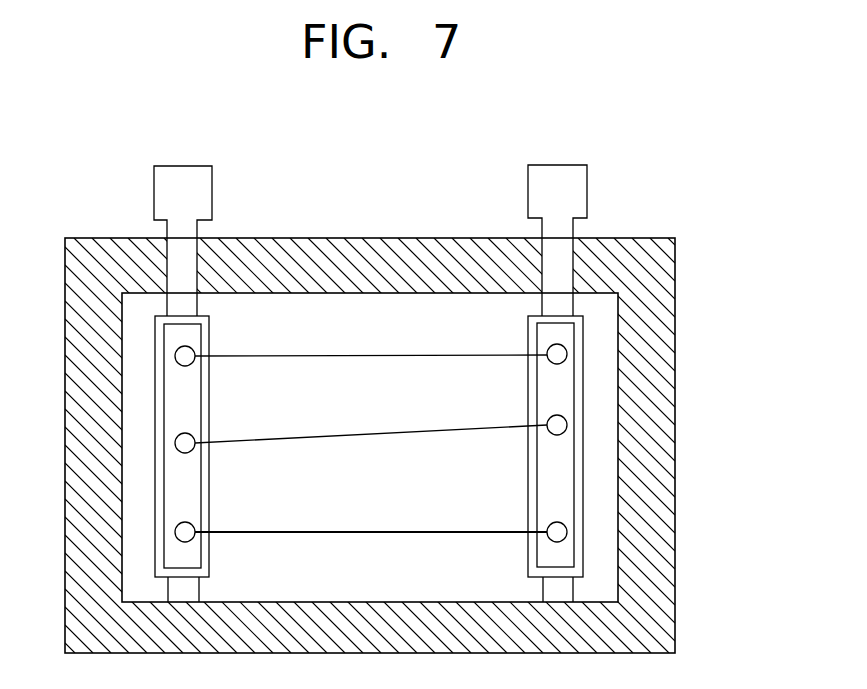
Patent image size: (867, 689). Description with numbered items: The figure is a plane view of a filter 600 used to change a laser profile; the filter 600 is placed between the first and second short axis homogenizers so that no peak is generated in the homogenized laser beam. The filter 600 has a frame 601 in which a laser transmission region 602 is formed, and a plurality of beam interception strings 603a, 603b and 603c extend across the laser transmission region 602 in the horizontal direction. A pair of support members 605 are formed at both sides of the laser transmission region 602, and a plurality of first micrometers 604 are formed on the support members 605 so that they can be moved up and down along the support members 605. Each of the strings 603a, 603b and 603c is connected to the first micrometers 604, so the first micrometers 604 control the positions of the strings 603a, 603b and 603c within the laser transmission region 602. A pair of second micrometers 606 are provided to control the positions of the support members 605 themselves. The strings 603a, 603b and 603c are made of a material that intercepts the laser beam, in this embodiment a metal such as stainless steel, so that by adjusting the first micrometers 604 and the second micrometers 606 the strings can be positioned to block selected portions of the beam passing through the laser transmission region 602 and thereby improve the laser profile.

The filter 600 is at (697, 328).
The frame 601 is at (676, 260).
The laser transmission region 602 is at (596, 307).
The beam interception string 603a is at (377, 356).
The beam interception string 603b is at (370, 434).
The beam interception string 603c is at (371, 531).
The first micrometer 604 is at (190, 346).
The support member 605 is at (165, 316).
The second micrometer 606 is at (182, 165).